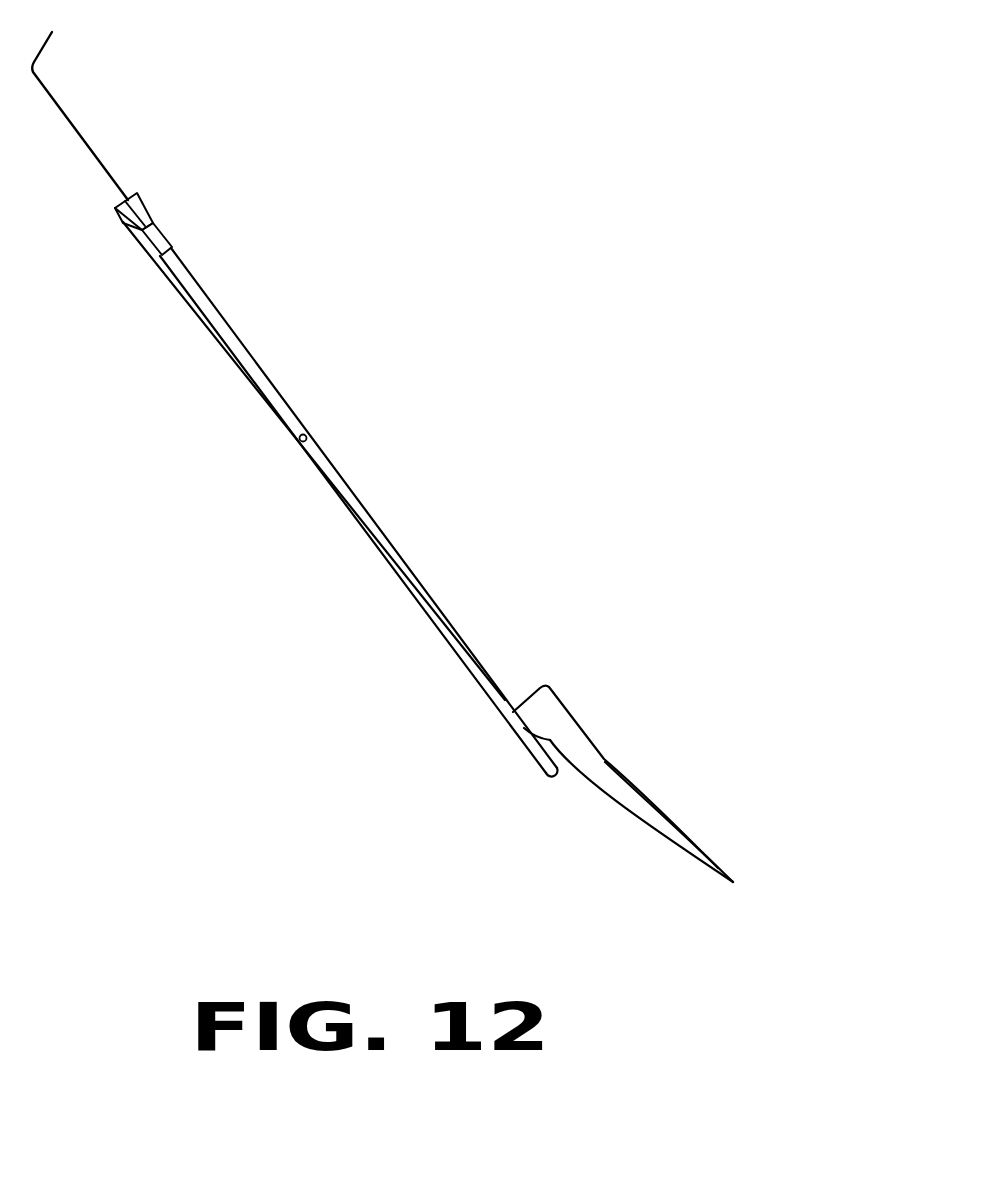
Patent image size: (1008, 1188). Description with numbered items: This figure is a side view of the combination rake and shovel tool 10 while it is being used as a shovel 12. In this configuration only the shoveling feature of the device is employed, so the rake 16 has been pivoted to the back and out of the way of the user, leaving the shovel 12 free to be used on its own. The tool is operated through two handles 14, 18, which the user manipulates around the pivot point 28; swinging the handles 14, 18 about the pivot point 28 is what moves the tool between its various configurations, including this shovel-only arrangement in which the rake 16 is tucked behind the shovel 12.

The combination rake and shovel tool 10 is at (637, 106).
The shovel 12 is at (604, 760).
The handle 14 is at (180, 297).
The rake 16 is at (68, 118).
The handle 18 is at (500, 705).
The pivot point 28 is at (307, 437).